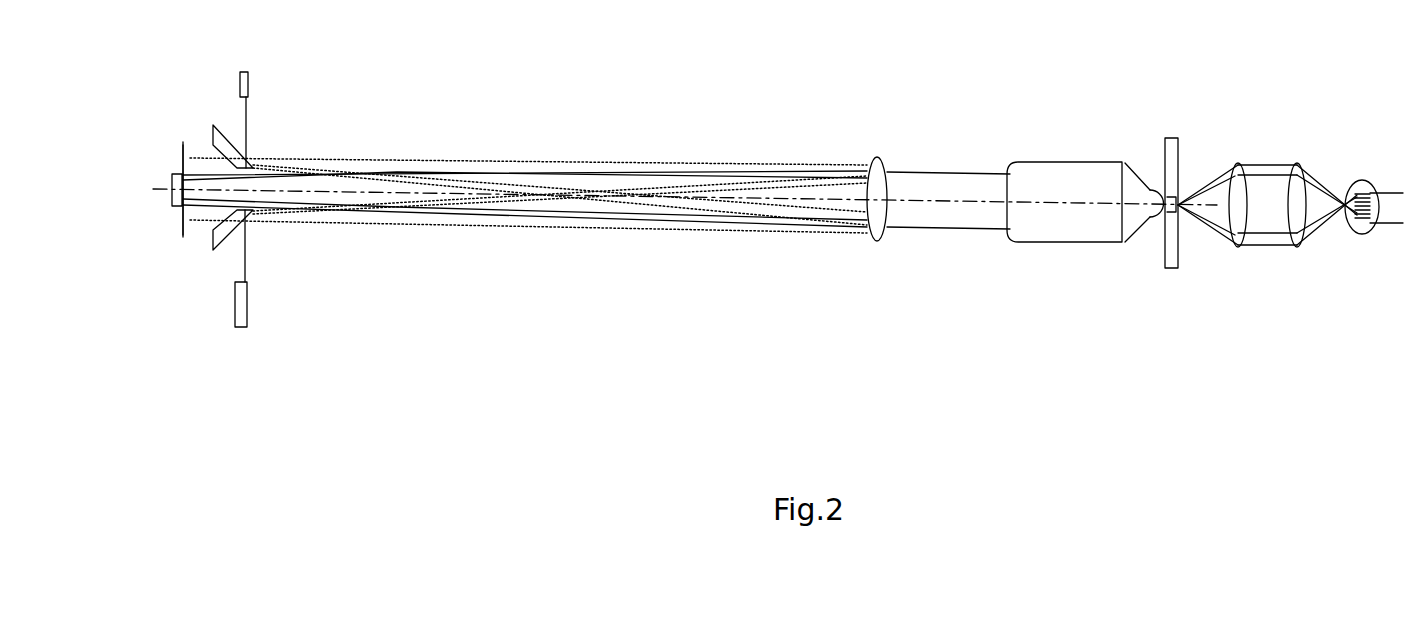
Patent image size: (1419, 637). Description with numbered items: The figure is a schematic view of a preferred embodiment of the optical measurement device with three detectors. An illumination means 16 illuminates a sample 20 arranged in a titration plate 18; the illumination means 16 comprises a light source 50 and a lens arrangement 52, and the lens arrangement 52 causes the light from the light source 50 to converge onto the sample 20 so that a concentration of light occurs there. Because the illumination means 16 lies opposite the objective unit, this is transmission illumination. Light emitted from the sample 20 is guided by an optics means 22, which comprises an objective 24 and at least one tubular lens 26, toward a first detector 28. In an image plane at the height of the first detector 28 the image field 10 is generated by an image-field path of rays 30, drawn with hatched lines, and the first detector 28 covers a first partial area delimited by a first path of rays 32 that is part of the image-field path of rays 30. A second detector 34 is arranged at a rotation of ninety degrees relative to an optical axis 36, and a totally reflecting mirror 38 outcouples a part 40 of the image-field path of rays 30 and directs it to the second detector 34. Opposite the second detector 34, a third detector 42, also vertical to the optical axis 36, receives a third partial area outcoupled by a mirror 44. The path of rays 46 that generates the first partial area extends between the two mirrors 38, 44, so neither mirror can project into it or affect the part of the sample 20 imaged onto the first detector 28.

The image field 10 is at (181, 163).
The illumination means 16 is at (1290, 202).
The titration plate 18 is at (1172, 252).
The sample 20 is at (1177, 200).
The optics means 22 is at (947, 140).
The objective 24 is at (1057, 183).
The tubular lens 26 is at (873, 163).
The first detector 28 is at (173, 198).
The image-field path of rays 30 is at (432, 167).
The first path of rays 32 is at (303, 203).
The second detector 34 is at (248, 80).
The optical axis 36 is at (928, 203).
The totally reflecting mirror 38 is at (232, 144).
The part of the image-field path of rays 40 is at (248, 128).
The third detector 42 is at (247, 317).
The mirror 44 is at (253, 213).
The path of rays 46 is at (195, 183).
The light source 50 is at (1362, 230).
The lens arrangement 52 is at (1297, 223).